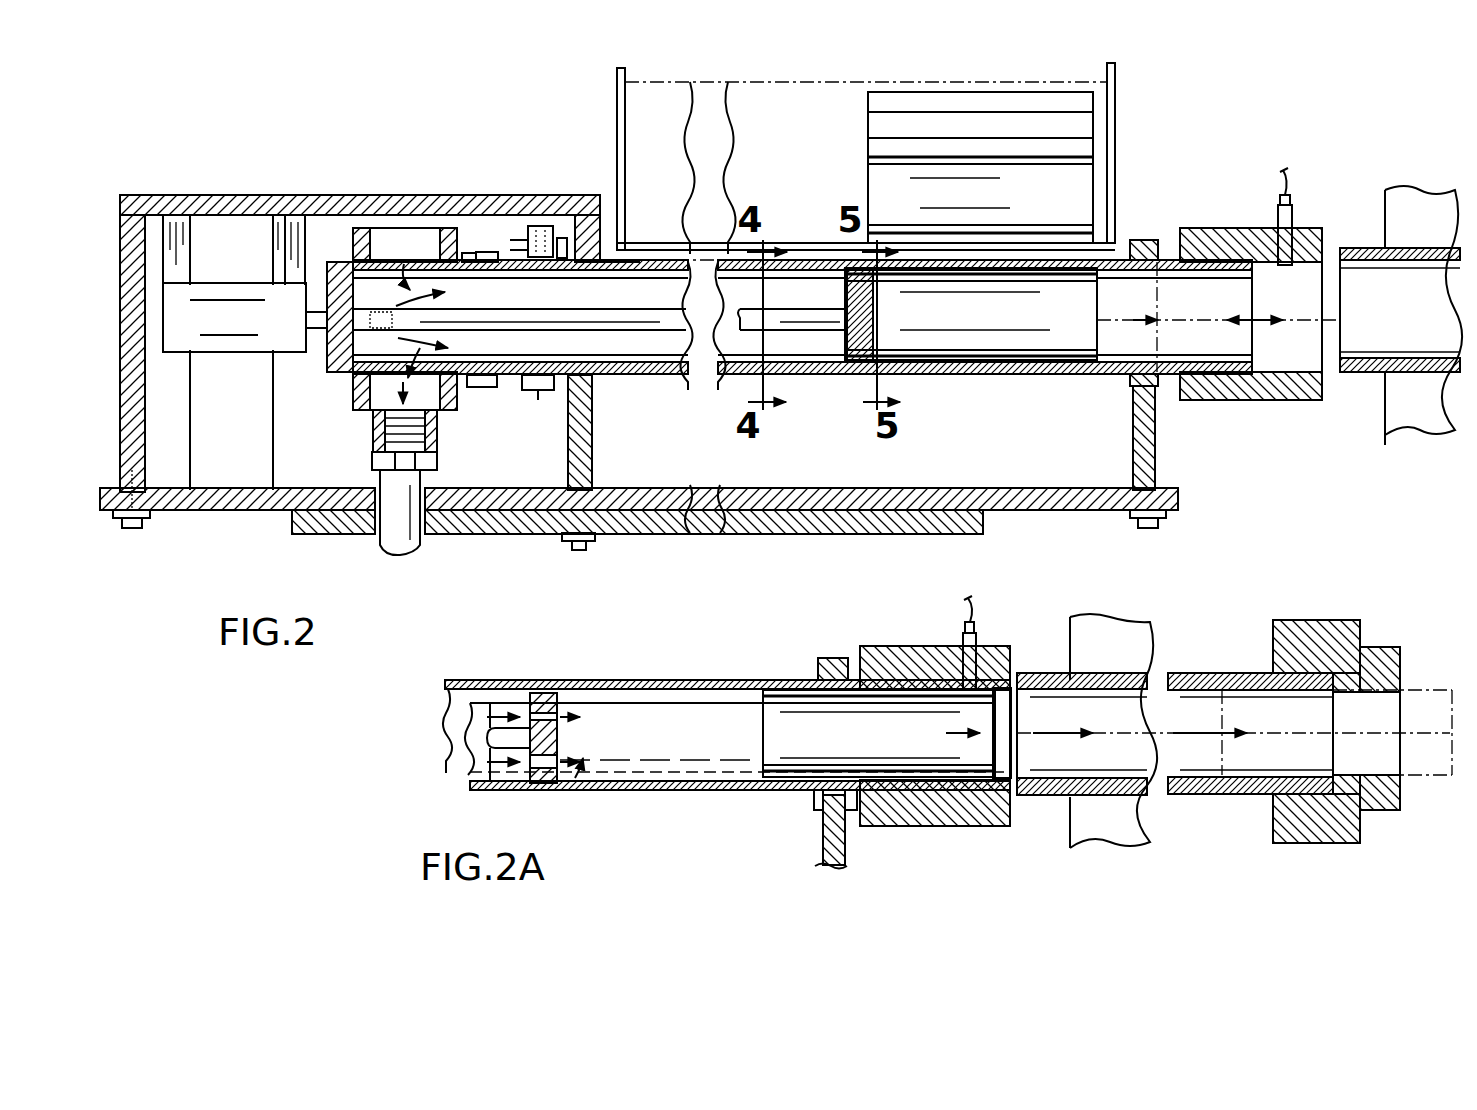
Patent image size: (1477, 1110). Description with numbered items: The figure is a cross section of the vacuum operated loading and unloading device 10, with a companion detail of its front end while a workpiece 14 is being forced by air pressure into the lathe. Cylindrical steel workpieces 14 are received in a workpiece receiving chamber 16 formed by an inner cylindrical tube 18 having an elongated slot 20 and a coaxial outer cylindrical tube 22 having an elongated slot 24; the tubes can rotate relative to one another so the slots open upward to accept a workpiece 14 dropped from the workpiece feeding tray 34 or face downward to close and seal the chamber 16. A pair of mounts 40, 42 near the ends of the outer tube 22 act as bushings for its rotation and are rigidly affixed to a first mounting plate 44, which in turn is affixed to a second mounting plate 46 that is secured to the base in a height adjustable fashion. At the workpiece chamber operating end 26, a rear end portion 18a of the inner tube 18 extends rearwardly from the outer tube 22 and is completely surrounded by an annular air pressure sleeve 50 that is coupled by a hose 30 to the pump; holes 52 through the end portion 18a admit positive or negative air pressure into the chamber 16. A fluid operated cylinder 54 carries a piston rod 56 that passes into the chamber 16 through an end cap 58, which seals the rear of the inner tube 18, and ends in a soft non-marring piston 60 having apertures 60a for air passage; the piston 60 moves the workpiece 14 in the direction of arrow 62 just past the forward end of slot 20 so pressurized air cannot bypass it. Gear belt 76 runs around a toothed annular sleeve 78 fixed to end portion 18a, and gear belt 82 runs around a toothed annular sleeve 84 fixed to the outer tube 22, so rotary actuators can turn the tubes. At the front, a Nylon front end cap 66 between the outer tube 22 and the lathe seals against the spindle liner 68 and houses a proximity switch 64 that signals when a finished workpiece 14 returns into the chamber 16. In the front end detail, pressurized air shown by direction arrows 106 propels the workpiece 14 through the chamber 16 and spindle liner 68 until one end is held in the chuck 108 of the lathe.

In FIG. 2, the vacuum operated loading and unloading device 10 is at (1190, 133).
In FIG. 2, the workpiece 14 is at (1078, 164).
In FIG. 2A, the workpiece 14 is at (873, 749).
In FIG. 2, the workpiece receiving chamber 16 is at (1113, 376).
In FIG. 2A, the workpiece receiving chamber 16 is at (702, 754).
In FIG. 2, the inner cylindrical tube 18 is at (707, 378).
In FIG. 2A, the inner cylindrical tube 18 is at (660, 790).
In FIG. 2, the rear end portion of inner tube 18a is at (468, 253).
In FIG. 2, the elongated slot of inner tube 20 is at (1158, 289).
In FIG. 2A, the elongated slot of inner tube 20 is at (657, 700).
In FIG. 2, the outer cylindrical tube 22 is at (982, 376).
In FIG. 2A, the outer cylindrical tube 22 is at (697, 682).
In FIG. 2, the elongated slot of outer tube 24 is at (1120, 240).
In FIG. 2A, the elongated slot of outer tube 24 is at (722, 775).
In FIG. 2, the workpiece chamber operating end 26 is at (368, 130).
In FIG. 2, the hose 30 is at (392, 541).
In FIG. 2, the workpiece feeding tray 34 is at (687, 122).
In FIG. 2, the mount 40 is at (592, 458).
In FIG. 2, the mount 42 is at (1156, 452).
In FIG. 2A, the mount 42 is at (832, 863).
In FIG. 2, the first mounting plate 44 is at (1052, 492).
In FIG. 2, the second mounting plate 46 is at (983, 527).
In FIG. 2, the annular air pressure sleeve 50 is at (402, 228).
In FIG. 2, the holes 52 is at (420, 272).
In FIG. 2, the fluid operated cylinder 54 is at (233, 342).
In FIG. 2, the piston rod 56 is at (665, 313).
In FIG. 2A, the piston rod 56 is at (493, 735).
In FIG. 2, the end cap 58 is at (327, 362).
In FIG. 2, the piston 60 is at (868, 318).
In FIG. 2A, the piston 60 is at (560, 742).
In FIG. 2A, the apertures 60a is at (543, 700).
In FIG. 2, the arrow 62 is at (1160, 332).
In FIG. 2A, the arrow 62 is at (1037, 733).
In FIG. 2, the proximity switch 64 is at (1295, 216).
In FIG. 2A, the proximity switch 64 is at (975, 646).
In FIG. 2, the front end cap 66 is at (1250, 400).
In FIG. 2A, the front end cap 66 is at (960, 826).
In FIG. 2, the spindle liner 68 is at (1418, 268).
In FIG. 2A, the spindle liner 68 is at (1160, 700).
In FIG. 2, the gear belt 76 is at (488, 252).
In FIG. 2, the toothed annular sleeve 78 is at (467, 387).
In FIG. 2, the gear belt 82 is at (541, 226).
In FIG. 2, the toothed annular sleeve 84 is at (527, 392).
In FIG. 2A, the direction arrows 106 is at (573, 788).
In FIG. 2A, the chuck 108 is at (1390, 652).